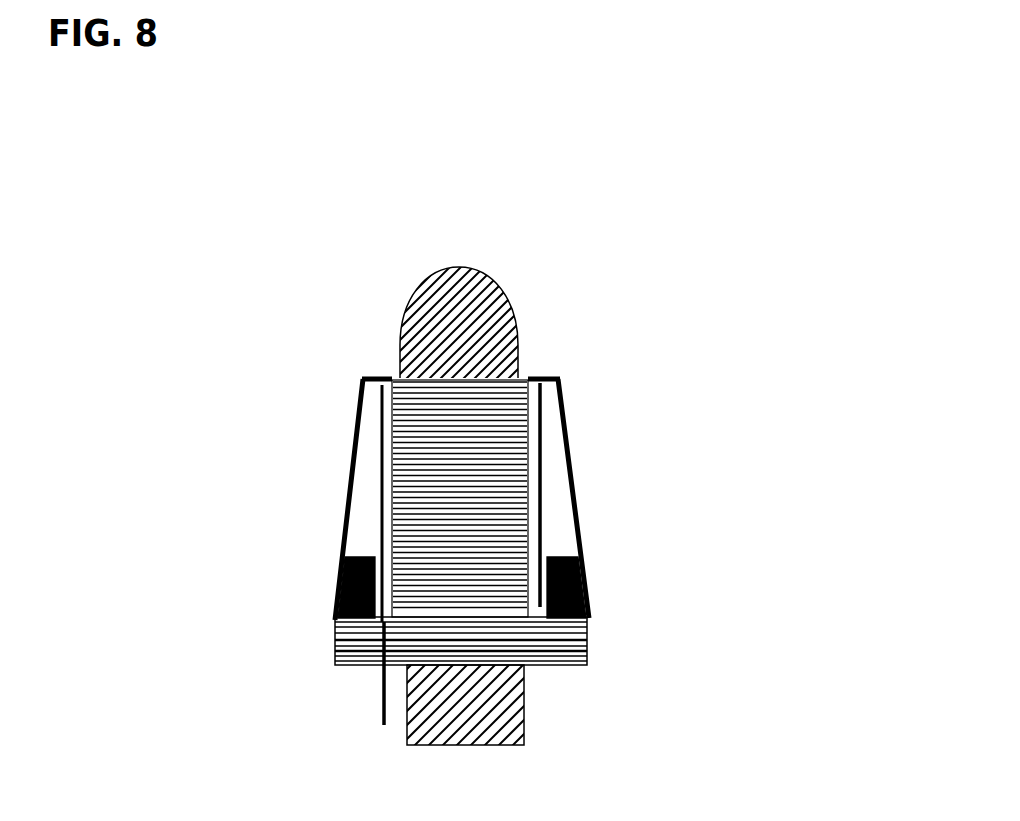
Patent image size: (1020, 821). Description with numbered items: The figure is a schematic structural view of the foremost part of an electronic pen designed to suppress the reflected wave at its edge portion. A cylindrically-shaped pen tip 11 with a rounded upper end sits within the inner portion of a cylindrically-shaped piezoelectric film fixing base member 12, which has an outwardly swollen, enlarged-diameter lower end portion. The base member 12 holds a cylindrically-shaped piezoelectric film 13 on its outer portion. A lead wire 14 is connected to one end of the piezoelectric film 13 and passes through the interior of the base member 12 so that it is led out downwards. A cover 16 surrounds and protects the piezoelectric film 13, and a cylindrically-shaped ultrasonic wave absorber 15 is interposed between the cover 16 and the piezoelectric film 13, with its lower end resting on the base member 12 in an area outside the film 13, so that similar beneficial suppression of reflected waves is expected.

The pen tip 11 is at (402, 335).
The piezoelectric film fixing base member 12 is at (587, 641).
The piezoelectric film 13 is at (383, 470).
The lead wire 14 is at (383, 688).
The ultrasonic wave absorber 15 is at (668, 517).
The cover 16 is at (348, 458).